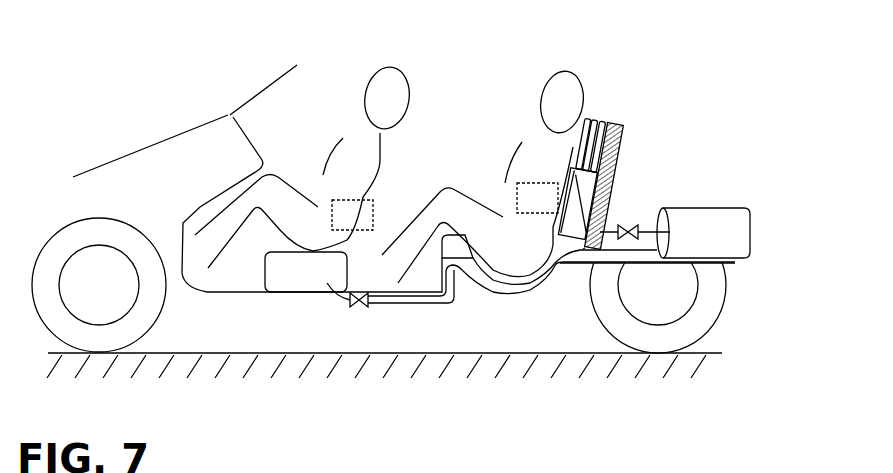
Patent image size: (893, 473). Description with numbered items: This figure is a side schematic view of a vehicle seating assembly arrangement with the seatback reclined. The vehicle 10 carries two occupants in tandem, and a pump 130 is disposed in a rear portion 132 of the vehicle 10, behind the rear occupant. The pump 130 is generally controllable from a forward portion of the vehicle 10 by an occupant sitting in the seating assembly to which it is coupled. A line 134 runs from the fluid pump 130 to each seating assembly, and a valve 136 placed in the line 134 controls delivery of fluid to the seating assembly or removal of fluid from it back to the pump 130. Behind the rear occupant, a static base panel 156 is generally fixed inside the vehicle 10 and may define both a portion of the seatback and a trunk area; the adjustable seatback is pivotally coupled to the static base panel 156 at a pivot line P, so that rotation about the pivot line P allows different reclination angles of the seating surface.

The vehicle 10 is at (217, 87).
The pump 130 is at (703, 208).
The rear portion 132 is at (643, 146).
The line 134 is at (518, 296).
The valve 136 is at (362, 307).
The static base panel 156 is at (622, 130).
The pivot line P is at (583, 249).